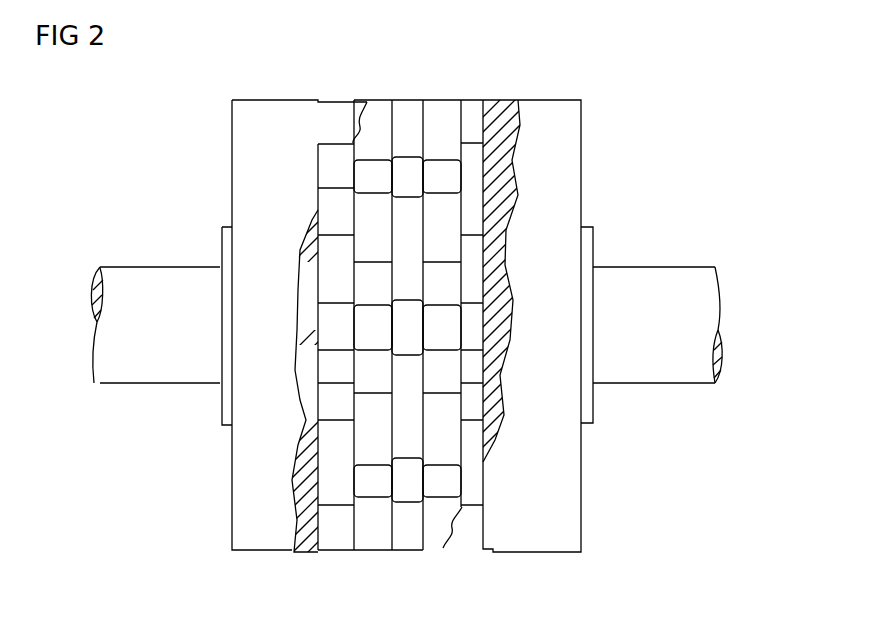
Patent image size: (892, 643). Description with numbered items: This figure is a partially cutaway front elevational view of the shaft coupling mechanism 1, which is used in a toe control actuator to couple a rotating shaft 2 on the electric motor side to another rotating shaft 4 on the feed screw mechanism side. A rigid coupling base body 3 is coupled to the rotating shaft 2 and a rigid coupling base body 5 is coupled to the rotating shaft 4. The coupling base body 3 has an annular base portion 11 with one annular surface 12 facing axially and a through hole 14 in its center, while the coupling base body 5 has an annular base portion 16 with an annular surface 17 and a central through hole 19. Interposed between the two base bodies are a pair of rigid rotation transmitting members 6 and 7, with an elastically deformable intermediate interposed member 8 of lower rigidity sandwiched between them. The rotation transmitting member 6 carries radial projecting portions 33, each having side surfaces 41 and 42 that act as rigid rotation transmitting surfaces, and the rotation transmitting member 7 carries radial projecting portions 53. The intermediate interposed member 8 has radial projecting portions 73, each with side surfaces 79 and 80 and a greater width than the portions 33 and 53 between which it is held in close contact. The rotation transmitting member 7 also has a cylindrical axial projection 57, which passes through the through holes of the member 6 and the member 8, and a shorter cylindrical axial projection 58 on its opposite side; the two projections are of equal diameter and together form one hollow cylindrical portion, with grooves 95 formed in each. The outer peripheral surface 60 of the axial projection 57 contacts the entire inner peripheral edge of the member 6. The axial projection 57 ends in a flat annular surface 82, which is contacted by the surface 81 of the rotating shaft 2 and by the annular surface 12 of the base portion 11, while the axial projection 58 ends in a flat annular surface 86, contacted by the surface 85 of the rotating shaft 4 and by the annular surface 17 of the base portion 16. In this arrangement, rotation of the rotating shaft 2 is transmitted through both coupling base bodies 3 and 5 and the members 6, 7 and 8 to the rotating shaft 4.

The shaft coupling mechanism 1 is at (213, 162).
The rotating shaft 2 is at (117, 372).
The coupling base body 3 is at (230, 480).
The rotating shaft 4 is at (676, 283).
The coupling base body 5 is at (585, 182).
The rotation transmitting member 6 is at (373, 100).
The rotation transmitting member 7 is at (445, 100).
The intermediate interposed member 8 is at (405, 553).
The annular base portion 11 is at (246, 140).
The annular surface 12 is at (318, 550).
The through hole 14 is at (285, 273).
The annular base portion 16 is at (568, 487).
The annular surface 17 is at (483, 123).
The through hole 19 is at (527, 376).
The radial projecting portions 33 is at (375, 203).
The side surface 41 is at (370, 222).
The side surface 42 is at (325, 235).
The radial projecting portions 53 is at (500, 228).
The cylindrical axial projection 57 is at (325, 277).
The cylindrical axial projection 58 is at (470, 393).
The outer peripheral surface 60 is at (335, 375).
The radial projecting portions 73 is at (407, 170).
The side surface 79 is at (417, 222).
The side surface 80 is at (457, 308).
The surface 81 is at (322, 333).
The flat annular surface 82 is at (300, 318).
The surface 85 is at (455, 338).
The flat annular surface 86 is at (485, 352).
The grooves 95 is at (473, 342).